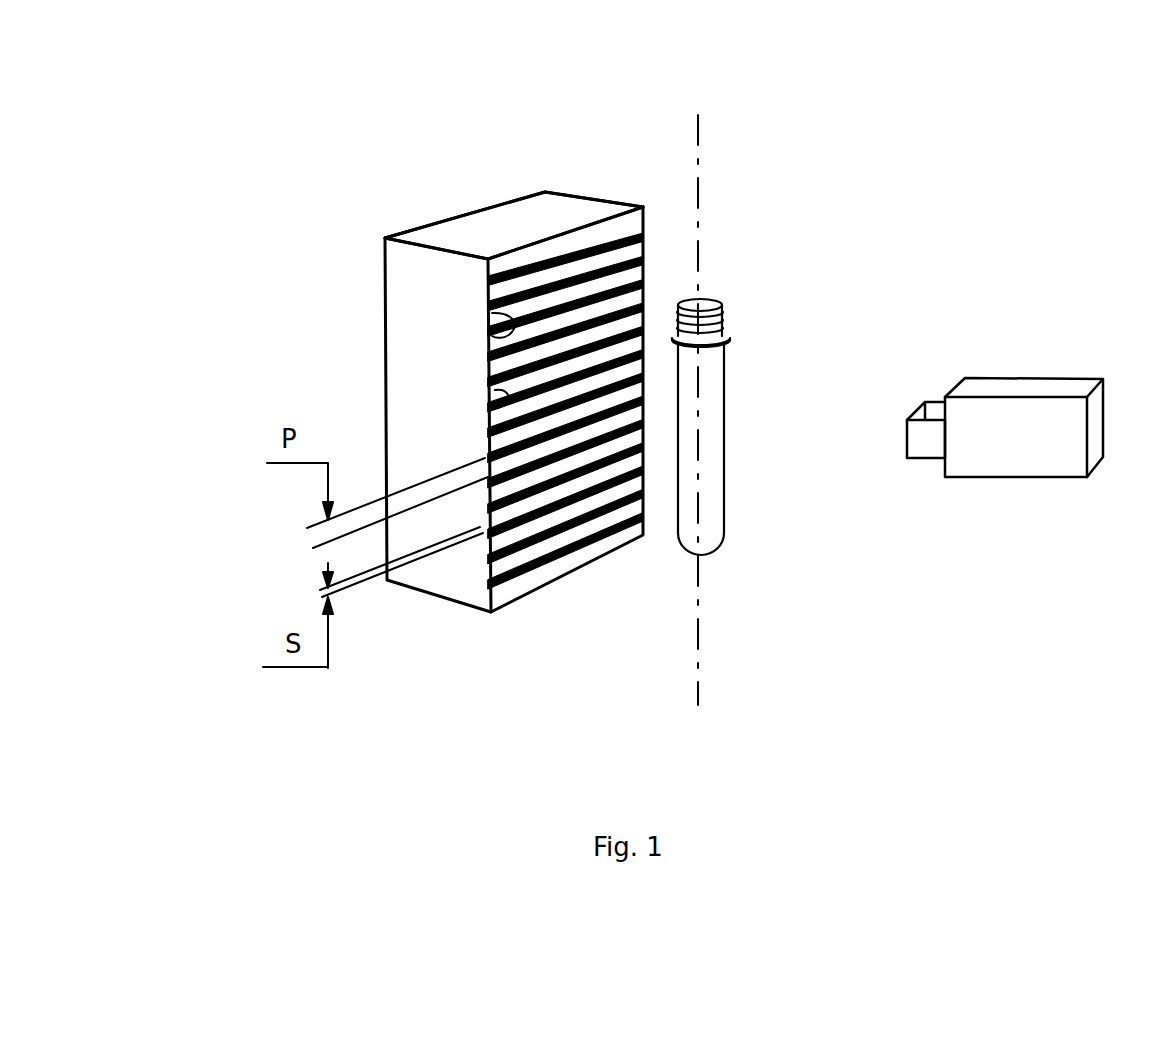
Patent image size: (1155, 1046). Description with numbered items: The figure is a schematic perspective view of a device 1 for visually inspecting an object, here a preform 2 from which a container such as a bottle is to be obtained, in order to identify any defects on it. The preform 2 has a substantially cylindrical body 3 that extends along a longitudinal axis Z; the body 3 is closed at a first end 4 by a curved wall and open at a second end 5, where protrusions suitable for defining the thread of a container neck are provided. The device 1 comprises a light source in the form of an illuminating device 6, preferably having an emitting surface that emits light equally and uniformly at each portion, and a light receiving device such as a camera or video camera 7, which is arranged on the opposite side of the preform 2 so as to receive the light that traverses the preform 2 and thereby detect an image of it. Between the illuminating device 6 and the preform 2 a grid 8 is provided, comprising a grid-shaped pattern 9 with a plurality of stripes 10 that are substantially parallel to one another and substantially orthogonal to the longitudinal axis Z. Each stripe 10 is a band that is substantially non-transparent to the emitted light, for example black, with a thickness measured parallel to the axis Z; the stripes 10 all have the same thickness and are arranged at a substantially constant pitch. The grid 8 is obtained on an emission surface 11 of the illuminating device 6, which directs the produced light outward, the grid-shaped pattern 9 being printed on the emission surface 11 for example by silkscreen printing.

The device 1 is at (310, 80).
The preform 2 is at (795, 288).
The body 3 is at (727, 430).
The first end 4 is at (718, 552).
The second end 5 is at (735, 322).
The illuminating device 6 is at (420, 228).
The camera or video camera 7 is at (1042, 382).
The grid 8 is at (573, 223).
The grid-shaped pattern 9 is at (487, 348).
The stripes 10 is at (540, 565).
The emission surface 11 is at (487, 410).
The longitudinal axis Z is at (698, 208).